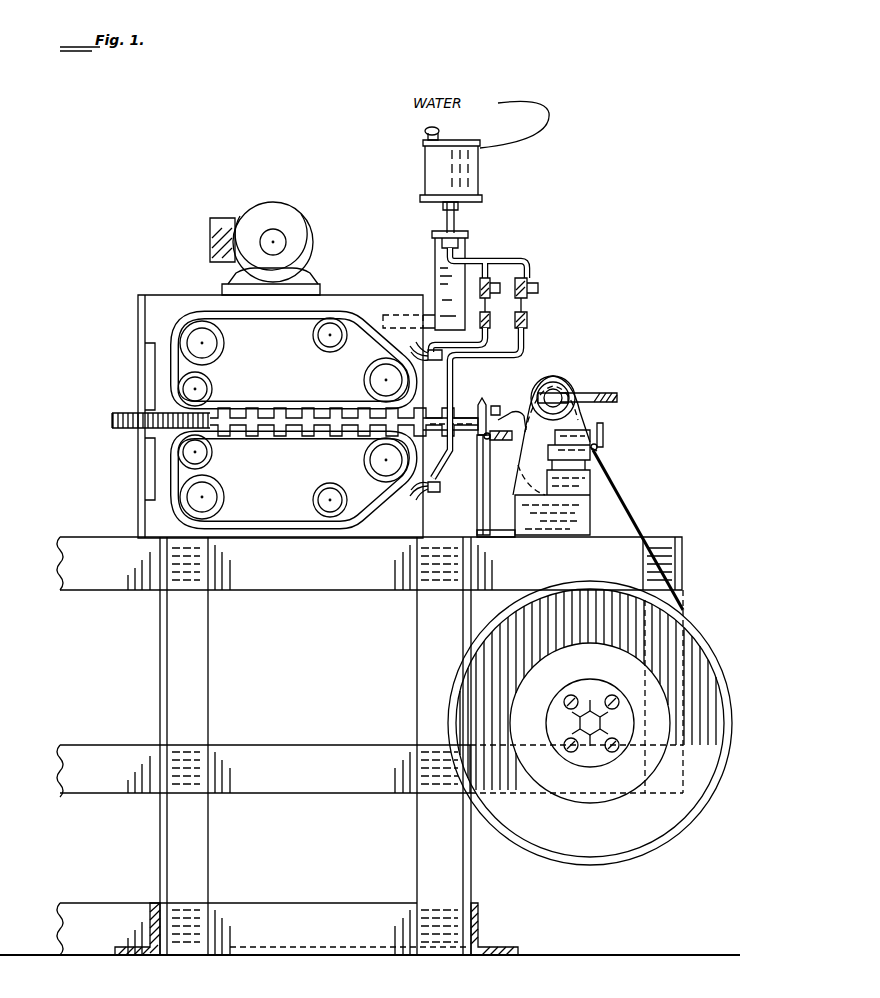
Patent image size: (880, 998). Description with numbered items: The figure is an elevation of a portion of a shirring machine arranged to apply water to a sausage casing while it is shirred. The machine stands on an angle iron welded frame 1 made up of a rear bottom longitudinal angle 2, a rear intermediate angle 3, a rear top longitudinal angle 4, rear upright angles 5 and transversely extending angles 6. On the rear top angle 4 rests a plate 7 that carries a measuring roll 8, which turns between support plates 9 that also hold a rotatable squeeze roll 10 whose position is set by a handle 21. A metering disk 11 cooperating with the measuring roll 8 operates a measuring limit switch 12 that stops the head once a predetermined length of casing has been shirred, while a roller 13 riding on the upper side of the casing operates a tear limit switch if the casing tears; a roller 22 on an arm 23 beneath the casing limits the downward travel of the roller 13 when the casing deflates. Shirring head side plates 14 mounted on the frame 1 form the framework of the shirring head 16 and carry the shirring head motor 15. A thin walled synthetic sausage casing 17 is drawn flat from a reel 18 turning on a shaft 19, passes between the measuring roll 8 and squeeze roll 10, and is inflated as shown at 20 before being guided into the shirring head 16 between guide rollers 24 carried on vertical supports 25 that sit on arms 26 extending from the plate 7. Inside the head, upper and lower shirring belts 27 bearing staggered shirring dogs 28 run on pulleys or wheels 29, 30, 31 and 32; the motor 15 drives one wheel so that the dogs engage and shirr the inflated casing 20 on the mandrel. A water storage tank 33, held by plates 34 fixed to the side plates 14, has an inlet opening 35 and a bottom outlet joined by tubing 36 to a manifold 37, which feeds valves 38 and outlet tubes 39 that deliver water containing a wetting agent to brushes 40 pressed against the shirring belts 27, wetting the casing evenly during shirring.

The angle iron welded frame 1 is at (130, 688).
The rear bottom longitudinal angle 2 is at (318, 898).
The rear intermediate angle 3 is at (268, 791).
The rear top longitudinal angle 4 is at (262, 586).
The rear upright angles 5 is at (208, 855).
The transversely extending angles 6 is at (150, 903).
The plate 7 is at (566, 490).
The measuring roll 8 is at (522, 470).
The support plates 9 is at (568, 410).
The squeeze roll 10 is at (565, 380).
The metering disk 11 is at (606, 435).
The measuring limit switch 12 is at (598, 450).
The roller 13 is at (492, 406).
The shirring head side plates 14 is at (355, 301).
The shirring head motor 15 is at (270, 203).
The shirring head 16 is at (160, 283).
The synthetic sausage casing 17 is at (618, 500).
The reel 18 is at (710, 770).
The shaft 19 is at (556, 716).
The inflated casing 20 is at (466, 434).
The handle 21 is at (608, 381).
The roller 22 is at (502, 440).
The arm 23 is at (504, 418).
The guide rollers 24 is at (480, 402).
The vertical supports 25 is at (478, 510).
The arms 26 is at (506, 520).
The shirring belts 27 is at (270, 324).
The shirring dogs 28 is at (268, 408).
The pulleys or wheels 29 is at (206, 392).
The pulleys or wheels 30 is at (212, 350).
The pulleys or wheels 31 is at (324, 339).
The pulleys or wheels 32 is at (370, 378).
The water storage tank 33 is at (428, 172).
The plates 34 is at (438, 258).
The inlet opening 35 is at (430, 128).
The tubing 36 is at (455, 215).
The manifold 37 is at (494, 254).
The valves 38 is at (536, 301).
The outlet tubes 39 is at (490, 340).
The brushes 40 is at (443, 358).